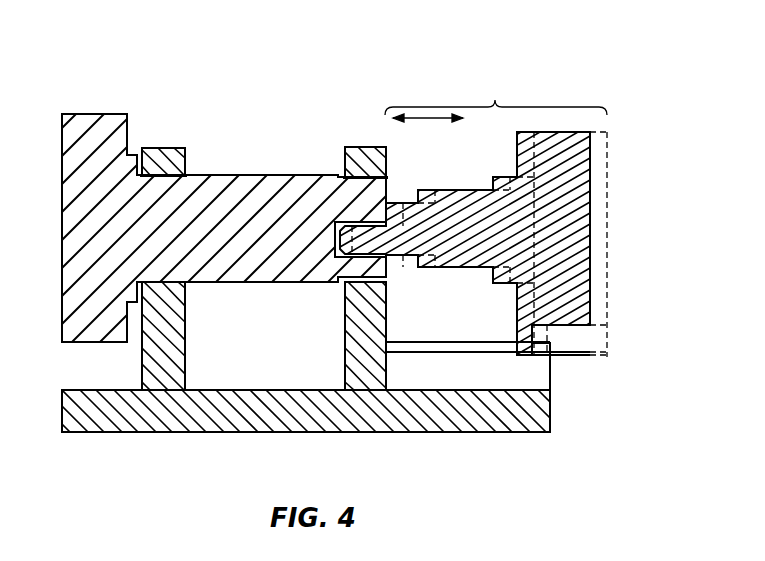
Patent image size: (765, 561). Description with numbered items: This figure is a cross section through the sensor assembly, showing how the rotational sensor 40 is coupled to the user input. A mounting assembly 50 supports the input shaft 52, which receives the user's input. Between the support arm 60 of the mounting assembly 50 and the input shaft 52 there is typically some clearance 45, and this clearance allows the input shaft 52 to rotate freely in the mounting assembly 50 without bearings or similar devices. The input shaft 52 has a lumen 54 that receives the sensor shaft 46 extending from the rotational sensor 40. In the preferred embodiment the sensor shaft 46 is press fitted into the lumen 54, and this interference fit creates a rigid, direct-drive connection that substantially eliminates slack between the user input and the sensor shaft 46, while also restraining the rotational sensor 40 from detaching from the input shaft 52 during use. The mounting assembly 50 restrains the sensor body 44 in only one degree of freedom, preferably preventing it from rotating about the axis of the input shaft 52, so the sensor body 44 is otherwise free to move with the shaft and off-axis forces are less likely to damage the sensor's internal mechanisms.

The rotational sensor 40 is at (495, 100).
The sensor body 44 is at (580, 270).
The clearance 45 is at (390, 177).
The sensor shaft 46 is at (388, 240).
The mounting assembly 50 is at (442, 432).
The input shaft 52 is at (244, 175).
The lumen 54 is at (337, 250).
The support arm 60 is at (155, 148).